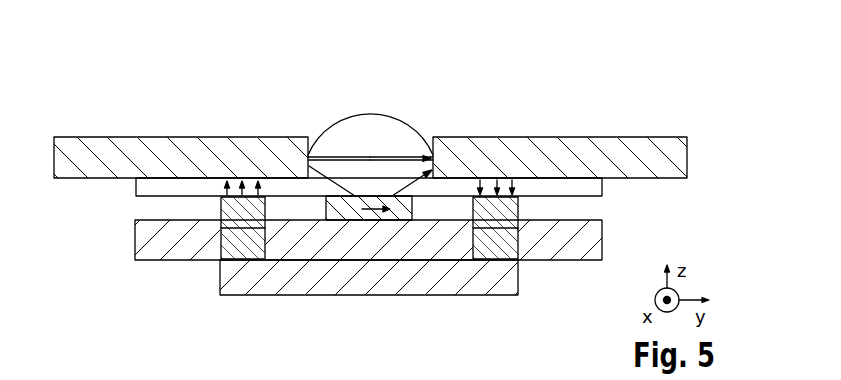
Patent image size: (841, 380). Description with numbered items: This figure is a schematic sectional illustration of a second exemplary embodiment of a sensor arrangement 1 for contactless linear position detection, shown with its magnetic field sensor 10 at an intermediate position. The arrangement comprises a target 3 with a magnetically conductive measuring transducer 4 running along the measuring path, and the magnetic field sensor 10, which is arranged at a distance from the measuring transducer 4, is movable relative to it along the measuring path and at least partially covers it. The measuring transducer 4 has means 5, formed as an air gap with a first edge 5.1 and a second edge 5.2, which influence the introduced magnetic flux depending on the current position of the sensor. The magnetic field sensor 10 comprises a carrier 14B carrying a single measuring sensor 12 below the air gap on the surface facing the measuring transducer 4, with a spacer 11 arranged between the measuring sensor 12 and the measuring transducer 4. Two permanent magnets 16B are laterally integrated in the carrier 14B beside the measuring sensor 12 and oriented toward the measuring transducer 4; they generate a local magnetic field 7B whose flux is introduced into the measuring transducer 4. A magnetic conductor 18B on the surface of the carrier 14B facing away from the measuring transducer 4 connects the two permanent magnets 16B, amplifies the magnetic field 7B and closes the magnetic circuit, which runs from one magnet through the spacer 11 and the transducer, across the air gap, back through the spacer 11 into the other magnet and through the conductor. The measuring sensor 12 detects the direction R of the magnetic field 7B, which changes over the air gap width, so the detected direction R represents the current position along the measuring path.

The sensor arrangement 1 is at (386, 111).
The target 3 is at (576, 118).
The measuring transducer 4 is at (570, 150).
The spacer 11 is at (369, 139).
The means for influencing the introduced magnetic flux 5 is at (373, 194).
The first edge of the air gap 5.1 is at (312, 154).
The second edge of the air gap 5.2 is at (430, 154).
The magnetic field 7B is at (391, 110).
The direction of the magnetic field R is at (356, 196).
The magnetic field sensor 10 is at (363, 270).
The measuring sensor 12 is at (398, 196).
The carrier 14B is at (580, 240).
The permanent magnets 16B is at (221, 250).
The magnetic conductor 18B is at (450, 282).